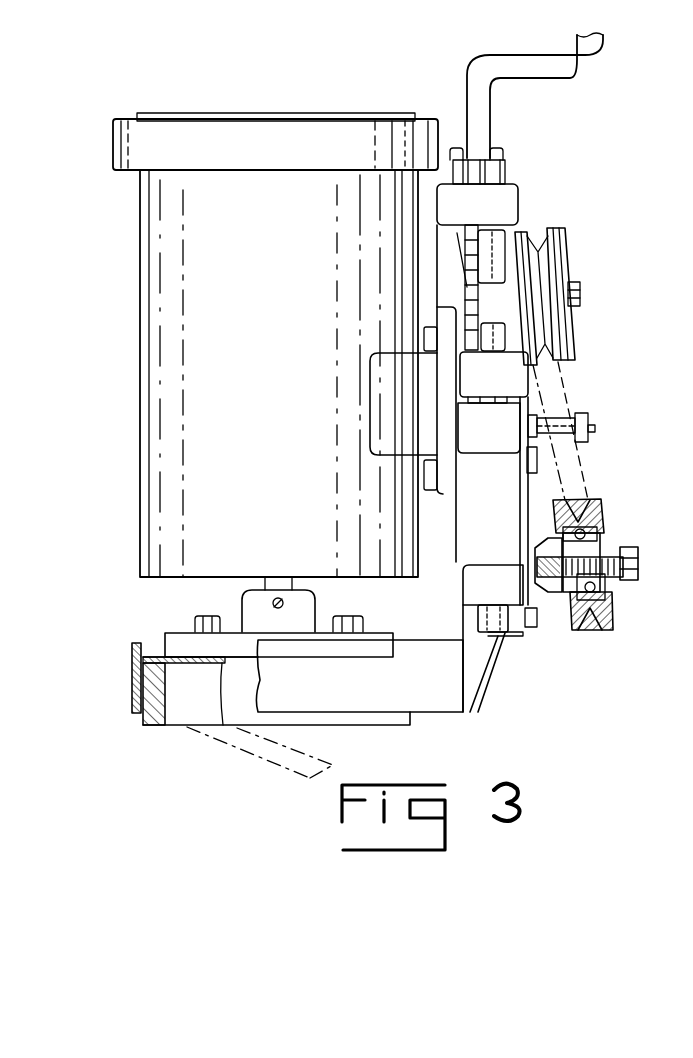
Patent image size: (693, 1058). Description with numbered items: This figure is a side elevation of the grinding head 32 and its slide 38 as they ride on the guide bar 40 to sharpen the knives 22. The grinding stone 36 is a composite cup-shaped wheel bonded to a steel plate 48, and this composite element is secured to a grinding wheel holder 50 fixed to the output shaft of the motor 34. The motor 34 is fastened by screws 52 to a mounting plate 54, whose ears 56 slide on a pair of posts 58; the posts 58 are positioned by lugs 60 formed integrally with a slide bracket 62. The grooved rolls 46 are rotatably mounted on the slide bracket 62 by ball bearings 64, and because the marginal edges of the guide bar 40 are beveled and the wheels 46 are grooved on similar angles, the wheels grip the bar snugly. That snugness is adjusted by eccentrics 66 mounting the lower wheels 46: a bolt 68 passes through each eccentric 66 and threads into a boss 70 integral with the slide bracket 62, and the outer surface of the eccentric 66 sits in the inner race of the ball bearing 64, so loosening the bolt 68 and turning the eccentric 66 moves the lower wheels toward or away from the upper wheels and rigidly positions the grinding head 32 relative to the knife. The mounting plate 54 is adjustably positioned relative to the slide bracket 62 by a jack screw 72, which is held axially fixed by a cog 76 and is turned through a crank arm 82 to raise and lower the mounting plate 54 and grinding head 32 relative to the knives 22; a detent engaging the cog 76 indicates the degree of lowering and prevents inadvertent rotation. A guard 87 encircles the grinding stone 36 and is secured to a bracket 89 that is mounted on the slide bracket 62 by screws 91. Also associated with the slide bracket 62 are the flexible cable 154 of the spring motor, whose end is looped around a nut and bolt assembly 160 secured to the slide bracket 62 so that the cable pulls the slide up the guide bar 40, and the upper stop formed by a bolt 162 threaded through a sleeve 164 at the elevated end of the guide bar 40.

The knives 22 is at (247, 753).
The grinding head 32 is at (122, 740).
The motor 34 is at (140, 457).
The grinding stone 36 is at (160, 727).
The slide 38 is at (537, 182).
The guide bar 40 is at (567, 392).
The grooved rolls 46 is at (565, 266).
The steel plate 48 is at (198, 662).
The grinding wheel holder 50 is at (315, 603).
The screws 52 is at (430, 365).
The mounting plate 54 is at (437, 441).
The ears 56 is at (518, 212).
The posts 58 is at (462, 560).
The lugs 60 is at (490, 400).
The slide bracket 62 is at (530, 497).
The ball bearings 64 is at (600, 522).
The eccentrics 66 is at (625, 572).
The bolt 68 is at (638, 560).
The boss 70 is at (538, 608).
The jack screw 72 is at (477, 204).
The cog 76 is at (460, 152).
The crank arm 82 is at (603, 47).
The guard 87 is at (133, 666).
The bracket 89 is at (498, 706).
The screws 91 is at (535, 637).
The flexible cable 154 is at (476, 533).
The nut and bolt assembly 160 is at (537, 467).
The bolt 162 is at (535, 405).
The sleeve 164 is at (550, 412).